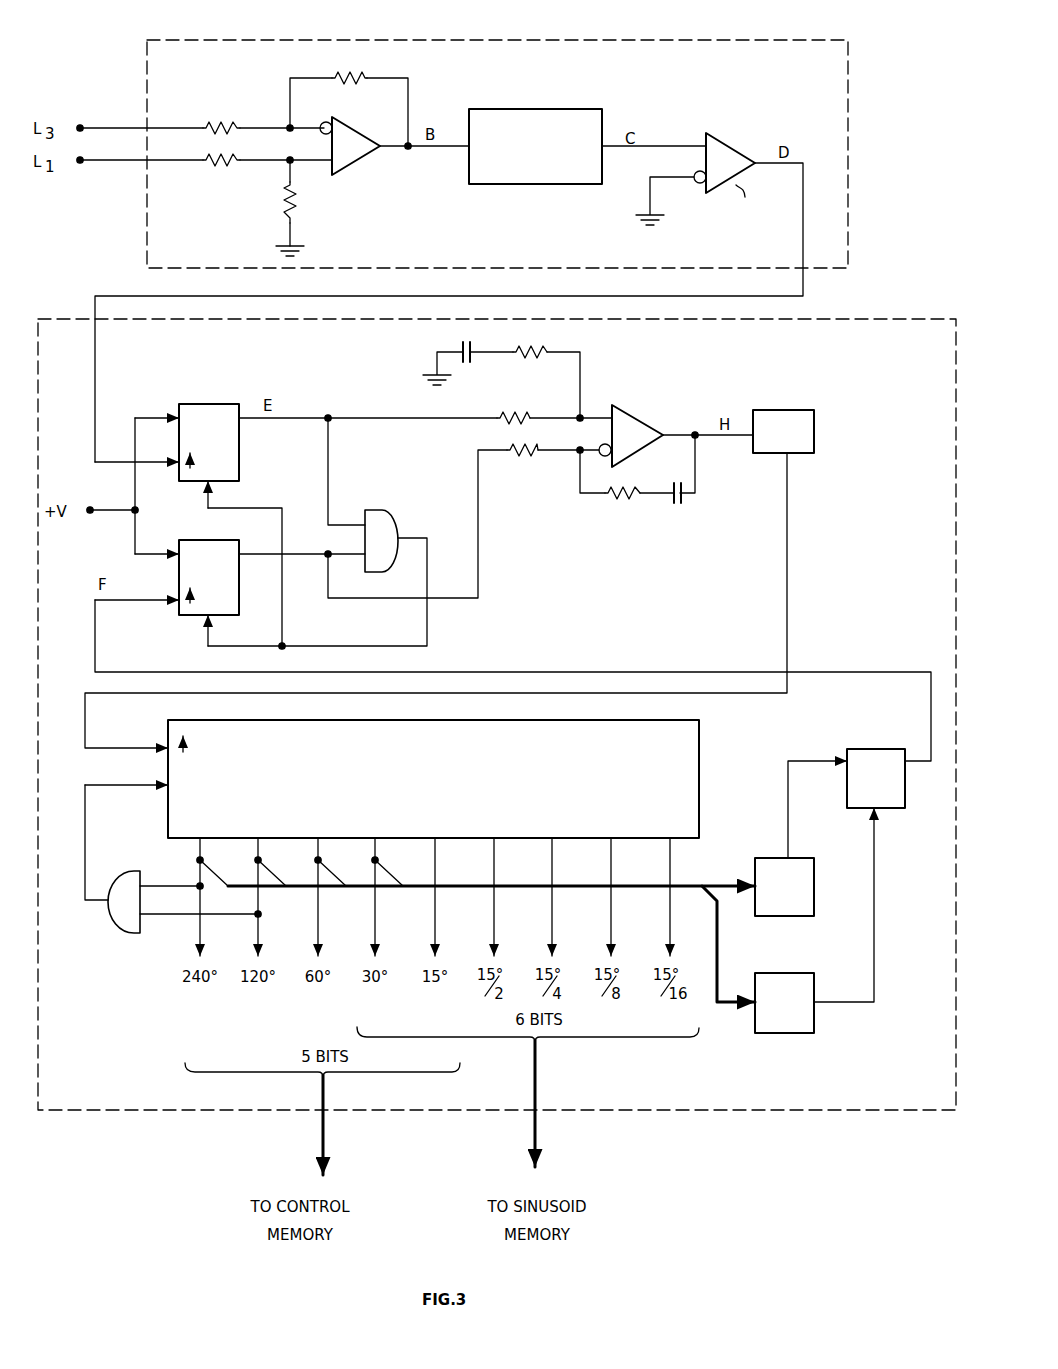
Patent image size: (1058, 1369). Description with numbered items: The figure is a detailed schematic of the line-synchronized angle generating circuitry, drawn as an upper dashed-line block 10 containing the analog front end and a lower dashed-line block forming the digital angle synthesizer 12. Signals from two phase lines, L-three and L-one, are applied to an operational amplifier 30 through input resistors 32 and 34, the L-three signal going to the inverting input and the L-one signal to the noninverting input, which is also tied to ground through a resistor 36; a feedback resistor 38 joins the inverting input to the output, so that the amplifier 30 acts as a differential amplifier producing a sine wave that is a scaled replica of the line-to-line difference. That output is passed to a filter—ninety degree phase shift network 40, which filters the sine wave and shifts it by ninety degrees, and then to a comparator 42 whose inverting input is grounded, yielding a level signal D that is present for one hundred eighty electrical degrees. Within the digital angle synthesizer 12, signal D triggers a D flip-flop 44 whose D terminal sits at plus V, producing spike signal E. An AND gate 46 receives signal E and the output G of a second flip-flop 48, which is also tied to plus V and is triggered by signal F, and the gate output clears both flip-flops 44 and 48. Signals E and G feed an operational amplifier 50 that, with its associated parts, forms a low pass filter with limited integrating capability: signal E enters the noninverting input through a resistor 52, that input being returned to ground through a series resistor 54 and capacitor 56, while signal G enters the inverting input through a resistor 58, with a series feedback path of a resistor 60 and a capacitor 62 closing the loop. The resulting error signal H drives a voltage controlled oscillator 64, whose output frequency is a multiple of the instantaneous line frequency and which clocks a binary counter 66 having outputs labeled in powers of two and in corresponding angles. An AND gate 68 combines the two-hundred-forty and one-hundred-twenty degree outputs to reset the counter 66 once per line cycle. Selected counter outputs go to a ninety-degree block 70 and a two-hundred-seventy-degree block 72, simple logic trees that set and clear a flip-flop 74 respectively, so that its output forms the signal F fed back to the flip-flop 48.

The input signal conditioning block 10 is at (850, 105).
The digital angle synthesizer 12 is at (919, 318).
The operational amplifier 30 is at (360, 176).
The input resistor 32 is at (222, 115).
The input resistor 34 is at (224, 172).
The resistor 36 is at (300, 203).
The feedback resistor 38 is at (350, 88).
The filter—90° phase shift network 40 is at (560, 109).
The comparator 42 is at (742, 150).
The D or trigger flip-flop 44 is at (239, 456).
The AND gate 46 is at (394, 515).
The second flip-flop 48 is at (186, 616).
The operational amplifier 50 is at (647, 418).
The input resistor 52 is at (495, 426).
The resistor 54 is at (537, 362).
The capacitor 56 is at (467, 366).
The resistor 58 is at (528, 462).
The resistor 60 is at (620, 504).
The capacitor 62 is at (679, 507).
The voltage controlled oscillator 64 is at (810, 410).
The binary counter 66 is at (699, 748).
The AND gate 68 is at (112, 930).
The 90° block 70 is at (800, 857).
The 270° block 72 is at (814, 1030).
The flip-flop 74 is at (876, 748).